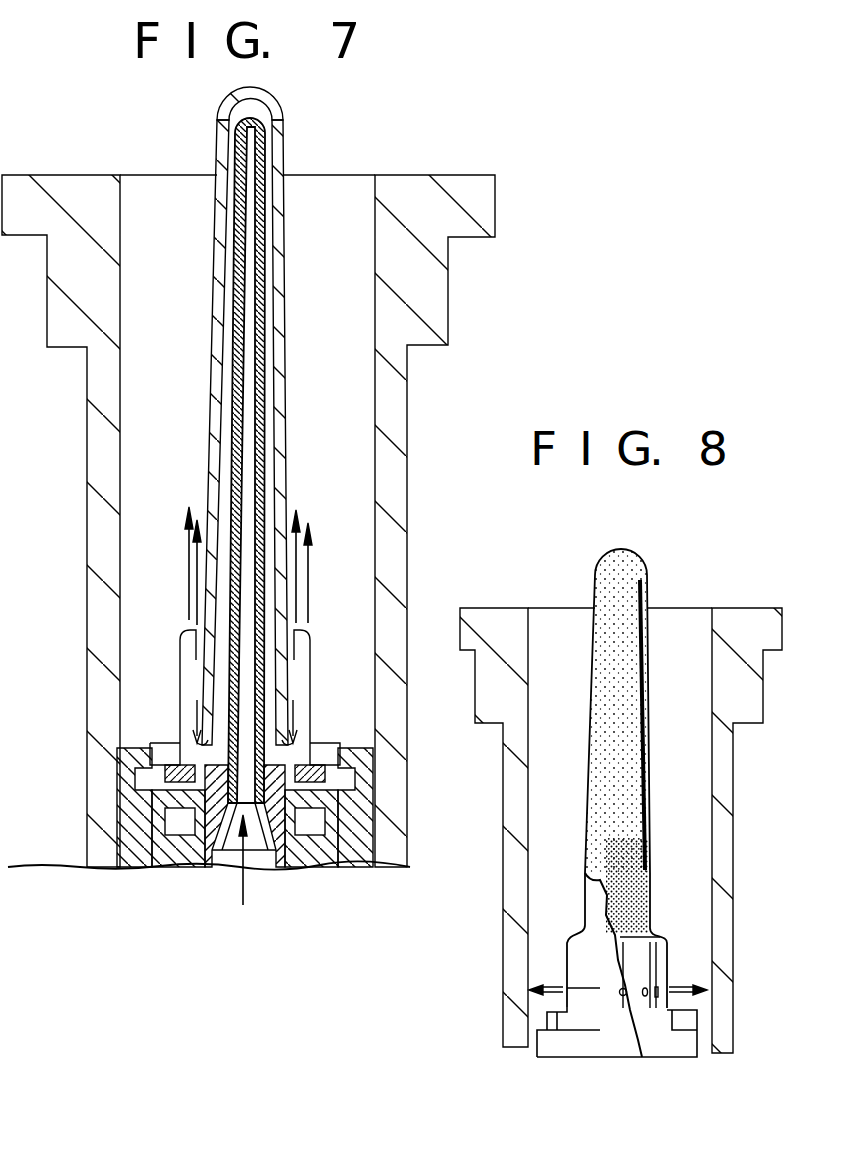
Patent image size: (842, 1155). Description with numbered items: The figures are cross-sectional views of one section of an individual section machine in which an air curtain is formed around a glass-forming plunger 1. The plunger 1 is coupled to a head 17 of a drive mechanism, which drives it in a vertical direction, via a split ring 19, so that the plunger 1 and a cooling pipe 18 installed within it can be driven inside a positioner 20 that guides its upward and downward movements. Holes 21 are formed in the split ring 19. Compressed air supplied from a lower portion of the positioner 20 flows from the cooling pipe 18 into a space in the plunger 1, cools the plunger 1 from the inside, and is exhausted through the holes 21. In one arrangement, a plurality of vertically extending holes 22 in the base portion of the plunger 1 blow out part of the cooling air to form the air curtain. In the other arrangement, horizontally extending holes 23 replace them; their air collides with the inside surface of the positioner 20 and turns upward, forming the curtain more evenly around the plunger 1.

In FIG. 7, the plunger 1 is at (284, 211).
In FIG. 8, the plunger 1 is at (650, 595).
In FIG. 7, the head 17 is at (295, 853).
In FIG. 7, the cooling pipe 18 is at (283, 362).
In FIG. 7, the split ring 19 is at (348, 746).
In FIG. 7, the positioner 20 is at (427, 288).
In FIG. 8, the positioner 20 is at (725, 827).
In FIG. 7, the holes 21 is at (337, 810).
In FIG. 7, the vertically extending holes 22 is at (178, 650).
In FIG. 8, the horizontally extending holes 23 is at (582, 993).